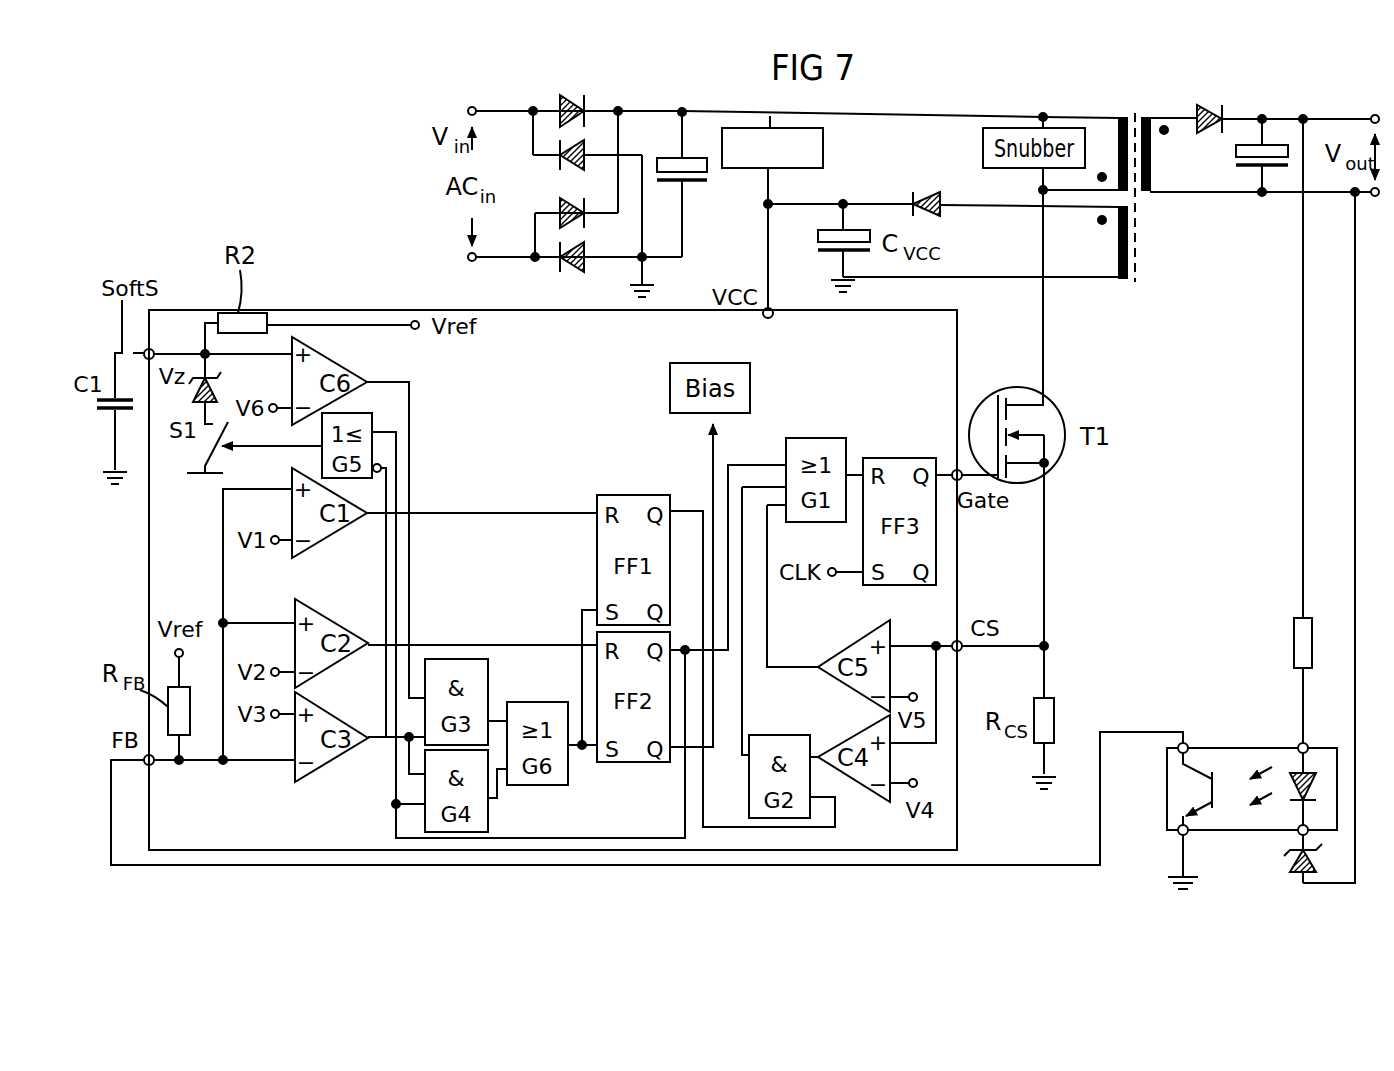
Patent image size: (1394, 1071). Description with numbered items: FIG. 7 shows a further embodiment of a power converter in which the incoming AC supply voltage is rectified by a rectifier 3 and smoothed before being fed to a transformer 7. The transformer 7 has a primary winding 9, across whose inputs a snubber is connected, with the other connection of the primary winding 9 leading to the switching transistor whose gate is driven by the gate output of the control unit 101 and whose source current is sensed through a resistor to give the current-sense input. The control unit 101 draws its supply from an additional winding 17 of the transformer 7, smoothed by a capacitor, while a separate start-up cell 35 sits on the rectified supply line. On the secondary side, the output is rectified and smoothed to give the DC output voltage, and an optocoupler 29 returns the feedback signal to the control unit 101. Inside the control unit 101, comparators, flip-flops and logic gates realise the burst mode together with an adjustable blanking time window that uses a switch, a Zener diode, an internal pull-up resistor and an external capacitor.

The rectifier 3 is at (548, 93).
The start-up cell 35 is at (825, 150).
The primary winding 9 is at (1121, 131).
The additional winding 17 is at (1119, 243).
The transformer 7 is at (1164, 233).
The control unit 101 is at (353, 310).
The optocoupler 29 is at (1237, 746).